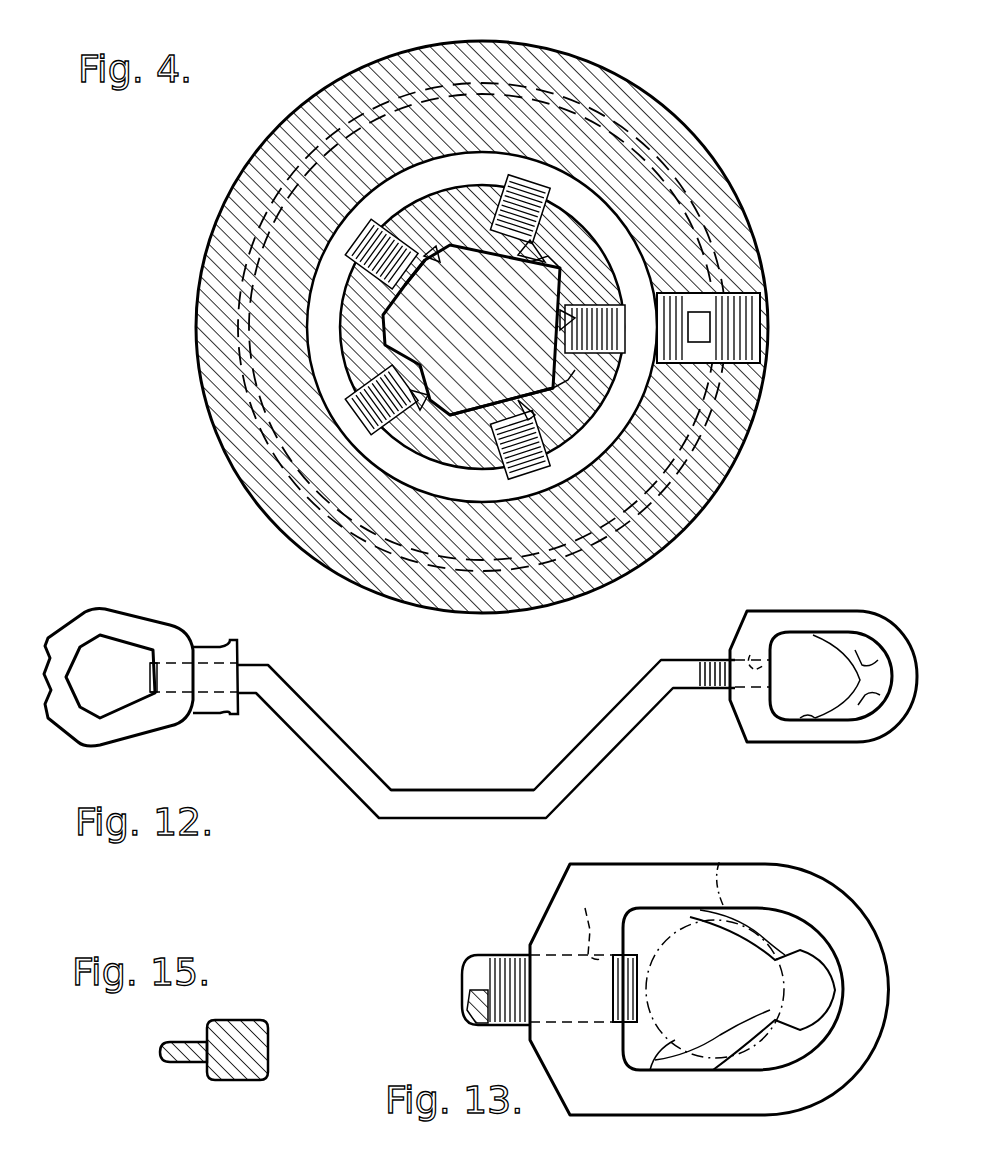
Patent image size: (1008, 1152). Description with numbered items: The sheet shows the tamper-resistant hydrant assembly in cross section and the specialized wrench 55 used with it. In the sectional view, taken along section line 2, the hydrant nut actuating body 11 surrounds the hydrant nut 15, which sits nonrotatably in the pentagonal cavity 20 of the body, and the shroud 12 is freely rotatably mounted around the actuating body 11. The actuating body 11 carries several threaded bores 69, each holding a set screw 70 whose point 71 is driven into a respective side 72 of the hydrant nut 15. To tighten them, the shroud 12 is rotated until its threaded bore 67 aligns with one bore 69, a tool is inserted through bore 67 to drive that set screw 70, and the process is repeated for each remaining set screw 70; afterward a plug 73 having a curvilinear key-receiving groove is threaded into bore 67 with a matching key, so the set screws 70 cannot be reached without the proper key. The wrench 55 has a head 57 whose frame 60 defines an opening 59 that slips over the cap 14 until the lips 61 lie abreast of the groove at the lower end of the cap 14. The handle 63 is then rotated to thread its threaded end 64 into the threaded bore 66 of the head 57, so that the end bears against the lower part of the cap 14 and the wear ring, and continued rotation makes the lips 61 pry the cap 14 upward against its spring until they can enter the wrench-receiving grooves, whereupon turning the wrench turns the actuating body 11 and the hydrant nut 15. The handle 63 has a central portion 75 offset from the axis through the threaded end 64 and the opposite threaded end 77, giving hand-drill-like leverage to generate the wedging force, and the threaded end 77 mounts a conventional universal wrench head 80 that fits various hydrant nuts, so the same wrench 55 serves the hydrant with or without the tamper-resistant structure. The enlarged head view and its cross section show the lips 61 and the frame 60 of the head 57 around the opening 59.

In FIG. 4, the section line 2- 2 is at (176, 330).
In FIG. 4, the hydrant nut actuating body 11 is at (340, 338).
In FIG. 4, the shroud 12 is at (745, 215).
In FIG. 13, the cap 14 is at (400, 990).
In FIG. 4, the hydrant nut 15 is at (498, 341).
In FIG. 13, the hydrant nut 15 is at (770, 961).
In FIG. 4, the pentagonal cavity 20 is at (440, 275).
In FIG. 12, the wrench 55 is at (372, 826).
In FIG. 12, the head 57 is at (810, 610).
In FIG. 13, the head 57 is at (805, 875).
In FIG. 12, the opening 59 is at (810, 720).
In FIG. 13, the opening 59 is at (665, 908).
In FIG. 12, the frame 60 is at (848, 618).
In FIG. 13, the frame 60 is at (748, 1100).
In FIG. 15, the frame 60 is at (230, 1020).
In FIG. 12, the lips 61 is at (850, 668).
In FIG. 13, the lips 61 is at (810, 985).
In FIG. 15, the lips 61 is at (190, 1062).
In FIG. 12, the handle 63 is at (595, 725).
In FIG. 12, the threaded end 64 is at (718, 660).
In FIG. 13, the threaded end 64 is at (512, 955).
In FIG. 12, the threaded bore 66 is at (750, 655).
In FIG. 13, the threaded bore 66 is at (584, 925).
In FIG. 4, the bore 67 is at (700, 355).
In FIG. 4, the bores 69 is at (478, 222).
In FIG. 4, the set screw 70 is at (372, 218).
In FIG. 4, the point 71 is at (520, 290).
In FIG. 4, the side 72 is at (538, 258).
In FIG. 4, the plug 73 is at (763, 305).
In FIG. 12, the central portion 75 is at (468, 790).
In FIG. 12, the threaded end 77 is at (245, 660).
In FIG. 12, the universal wrench head 80 is at (150, 625).